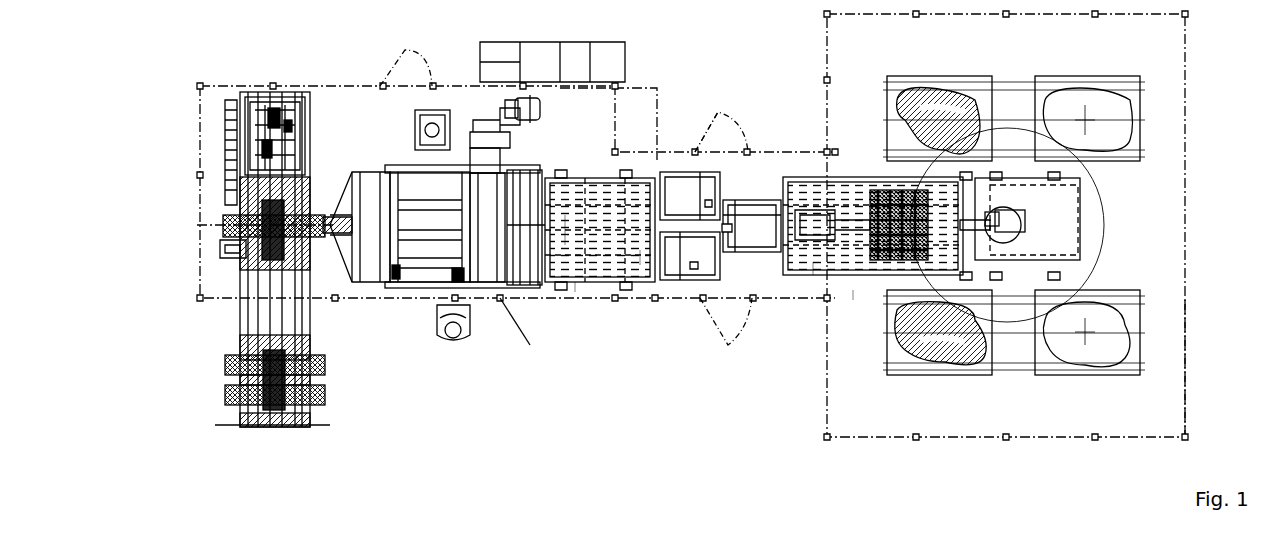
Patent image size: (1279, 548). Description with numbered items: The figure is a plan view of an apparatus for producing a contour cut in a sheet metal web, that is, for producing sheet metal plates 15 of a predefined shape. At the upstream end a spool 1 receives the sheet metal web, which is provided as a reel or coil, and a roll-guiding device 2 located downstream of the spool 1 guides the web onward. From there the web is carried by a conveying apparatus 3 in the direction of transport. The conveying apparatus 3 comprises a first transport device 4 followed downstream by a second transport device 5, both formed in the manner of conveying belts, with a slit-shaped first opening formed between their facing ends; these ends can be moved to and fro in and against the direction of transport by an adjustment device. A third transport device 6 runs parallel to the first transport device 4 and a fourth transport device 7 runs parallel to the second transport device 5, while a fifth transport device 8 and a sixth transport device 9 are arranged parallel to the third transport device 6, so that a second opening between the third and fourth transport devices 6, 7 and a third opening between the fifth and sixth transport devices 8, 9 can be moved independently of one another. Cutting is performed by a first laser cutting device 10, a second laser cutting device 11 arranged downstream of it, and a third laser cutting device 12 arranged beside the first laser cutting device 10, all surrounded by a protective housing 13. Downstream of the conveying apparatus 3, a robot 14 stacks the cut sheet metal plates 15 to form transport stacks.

The spool 1 is at (240, 235).
The roll-guiding device 2 is at (480, 182).
The conveying apparatus 3 is at (582, 290).
The first transport device 4 is at (641, 262).
The second transport device 5 is at (813, 265).
The third transport device 6 is at (565, 235).
The fourth transport device 7 is at (853, 300).
The fifth transport device 8 is at (595, 190).
The sixth transport device 9 is at (845, 190).
The first laser cutting device 10 is at (690, 272).
The second laser cutting device 11 is at (747, 228).
The third laser cutting device 12 is at (673, 188).
The protective housing 13 is at (775, 152).
The robot 14 is at (1020, 224).
The sheet metal plates 15 is at (1020, 62).